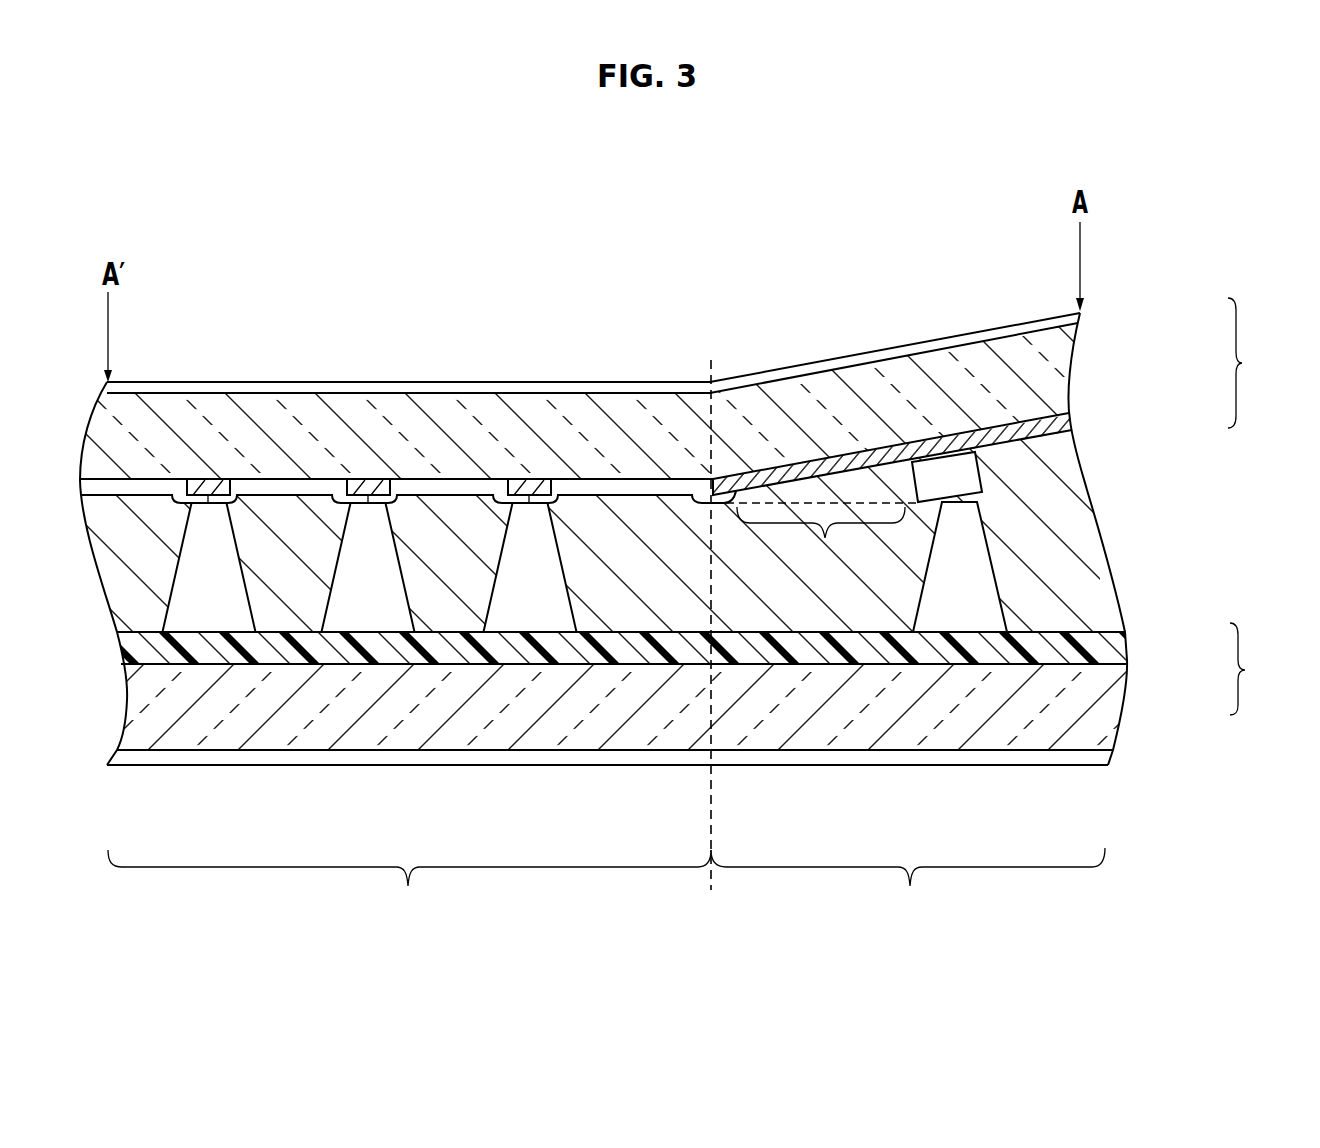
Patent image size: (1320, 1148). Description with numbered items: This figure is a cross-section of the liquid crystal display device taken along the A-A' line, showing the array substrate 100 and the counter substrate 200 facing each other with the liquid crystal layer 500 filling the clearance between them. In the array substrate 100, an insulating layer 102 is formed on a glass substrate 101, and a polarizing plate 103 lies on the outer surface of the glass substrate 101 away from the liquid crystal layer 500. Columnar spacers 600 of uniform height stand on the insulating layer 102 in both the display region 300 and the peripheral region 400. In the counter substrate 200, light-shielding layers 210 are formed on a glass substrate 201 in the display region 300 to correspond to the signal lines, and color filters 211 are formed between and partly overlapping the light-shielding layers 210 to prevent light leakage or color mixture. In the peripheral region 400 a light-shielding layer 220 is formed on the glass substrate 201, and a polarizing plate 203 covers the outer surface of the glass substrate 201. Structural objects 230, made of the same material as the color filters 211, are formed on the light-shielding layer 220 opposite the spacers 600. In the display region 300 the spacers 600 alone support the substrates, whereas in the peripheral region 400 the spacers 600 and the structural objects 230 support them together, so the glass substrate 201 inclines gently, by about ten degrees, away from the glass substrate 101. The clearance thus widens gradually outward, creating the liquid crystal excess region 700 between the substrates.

The array substrate 100 is at (1261, 669).
The glass substrate 101 is at (1108, 707).
The insulating layer 102 is at (1117, 645).
The polarizing plate 103 is at (1098, 757).
The counter substrate 200 is at (1259, 363).
The glass substrate 201 is at (1062, 370).
The polarizing plate 203 is at (1083, 313).
The light-shielding layer 210 is at (208, 479).
The color filter 211 is at (155, 490).
The light-shielding layer 220 is at (1066, 418).
The structural object 230 is at (972, 463).
The display region 300 is at (409, 889).
The peripheral region 400 is at (908, 888).
The liquid crystal layer 500 is at (1088, 520).
The columnar spacer 600 is at (200, 606).
The liquid crystal excess region 700 is at (815, 542).